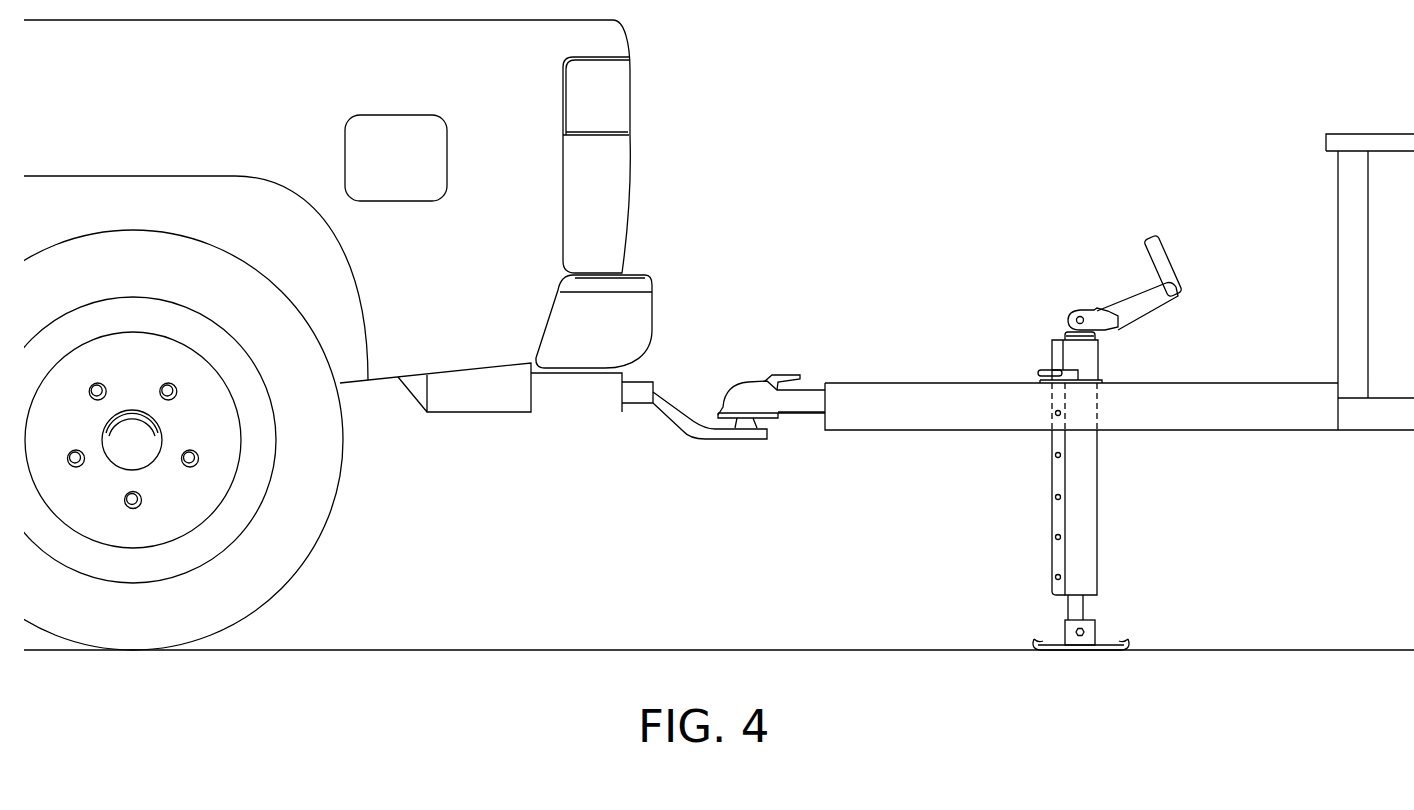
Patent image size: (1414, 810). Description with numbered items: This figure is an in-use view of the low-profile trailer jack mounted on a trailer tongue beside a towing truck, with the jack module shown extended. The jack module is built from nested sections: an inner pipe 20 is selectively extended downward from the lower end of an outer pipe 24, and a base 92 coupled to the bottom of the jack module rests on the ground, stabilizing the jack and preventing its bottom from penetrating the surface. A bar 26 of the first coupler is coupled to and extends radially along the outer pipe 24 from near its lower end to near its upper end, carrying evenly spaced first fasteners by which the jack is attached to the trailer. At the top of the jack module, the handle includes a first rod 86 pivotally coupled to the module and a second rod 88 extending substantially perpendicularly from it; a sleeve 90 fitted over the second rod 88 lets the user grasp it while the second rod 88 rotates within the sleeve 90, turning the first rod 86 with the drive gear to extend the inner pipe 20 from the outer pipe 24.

The inner pipe 20 is at (1082, 612).
The outer pipe 24 is at (1083, 518).
The bar 26 is at (1058, 510).
The first rod 86 is at (1140, 316).
The second rod 88 is at (1168, 262).
The sleeve 90 is at (1147, 257).
The base 92 is at (1112, 642).